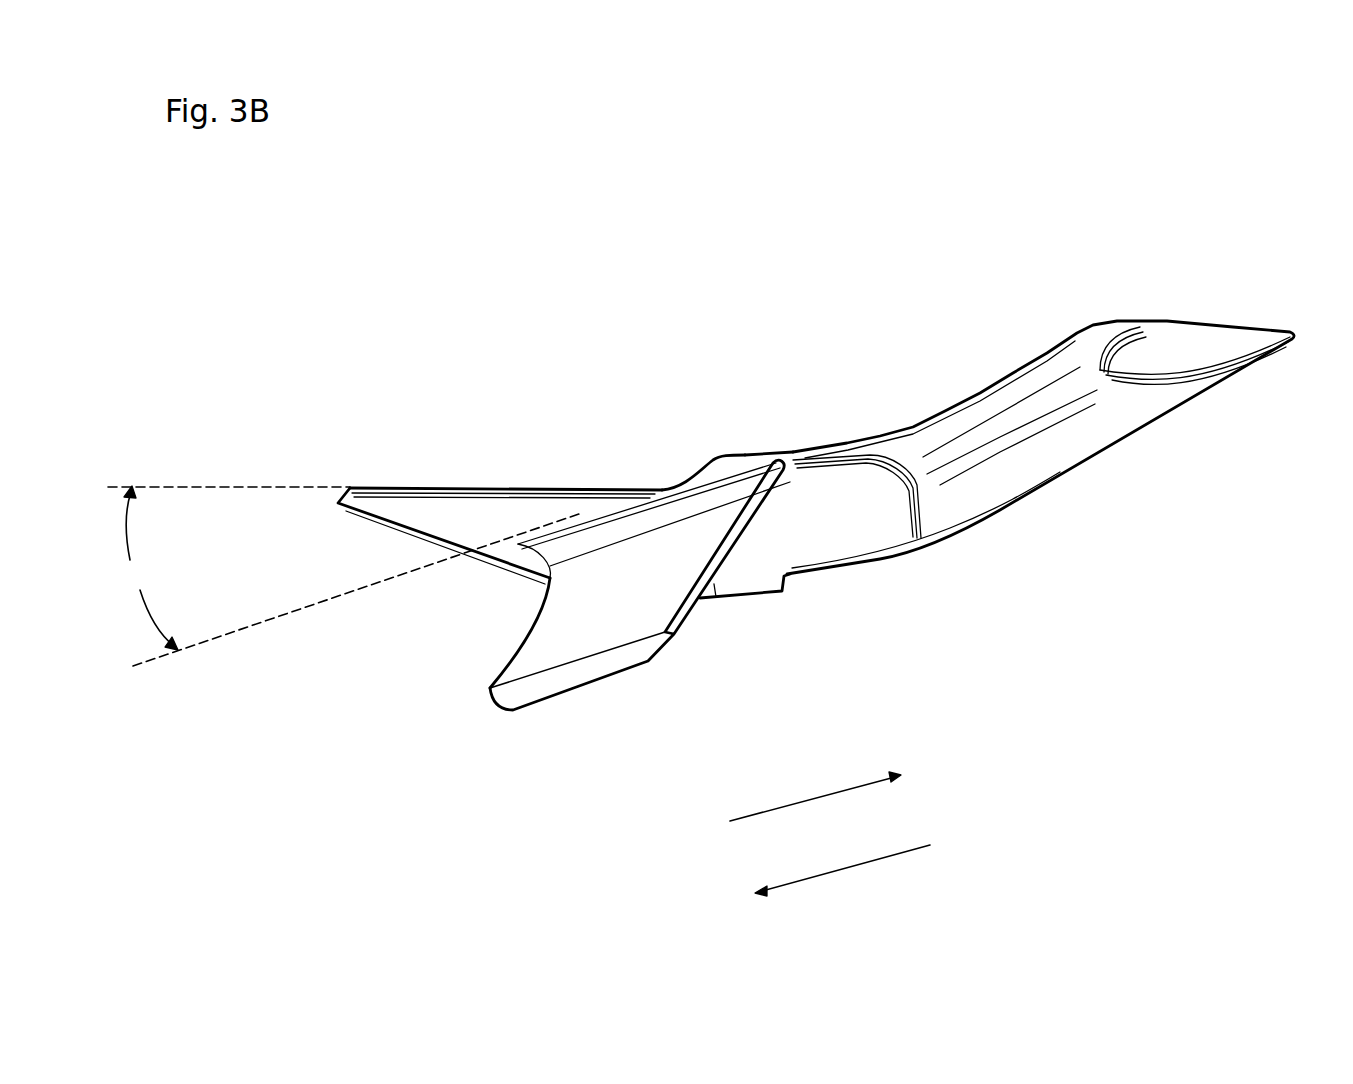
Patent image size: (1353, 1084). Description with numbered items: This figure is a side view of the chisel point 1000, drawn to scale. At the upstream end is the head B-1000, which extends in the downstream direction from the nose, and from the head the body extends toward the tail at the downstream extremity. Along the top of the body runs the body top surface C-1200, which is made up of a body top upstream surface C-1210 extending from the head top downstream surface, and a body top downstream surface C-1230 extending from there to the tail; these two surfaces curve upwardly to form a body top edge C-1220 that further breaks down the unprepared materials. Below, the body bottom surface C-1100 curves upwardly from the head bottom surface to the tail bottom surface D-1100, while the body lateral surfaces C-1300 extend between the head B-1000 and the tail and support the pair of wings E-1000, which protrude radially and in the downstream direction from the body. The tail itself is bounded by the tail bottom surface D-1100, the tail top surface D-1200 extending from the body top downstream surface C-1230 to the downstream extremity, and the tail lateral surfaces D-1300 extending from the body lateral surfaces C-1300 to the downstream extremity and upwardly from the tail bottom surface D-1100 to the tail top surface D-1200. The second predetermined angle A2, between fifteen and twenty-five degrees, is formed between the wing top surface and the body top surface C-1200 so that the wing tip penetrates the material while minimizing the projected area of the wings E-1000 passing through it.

The chisel point 1000 is at (790, 309).
The head B-1000 is at (969, 349).
The body top surface C-1200 is at (783, 388).
The body top downstream surface C-1230 is at (570, 488).
The body top edge C-1220 is at (710, 460).
The body top upstream surface C-1210 is at (793, 453).
The body lateral surfaces C-1300 is at (847, 503).
The tail top surface D-1200 is at (367, 488).
The tail bottom surface D-1100 is at (385, 519).
The tail lateral surfaces D-1300 is at (430, 523).
The body bottom surface C-1100 is at (480, 562).
The wings E-1000 is at (719, 650).
The second predetermined angle A2 is at (149, 568).